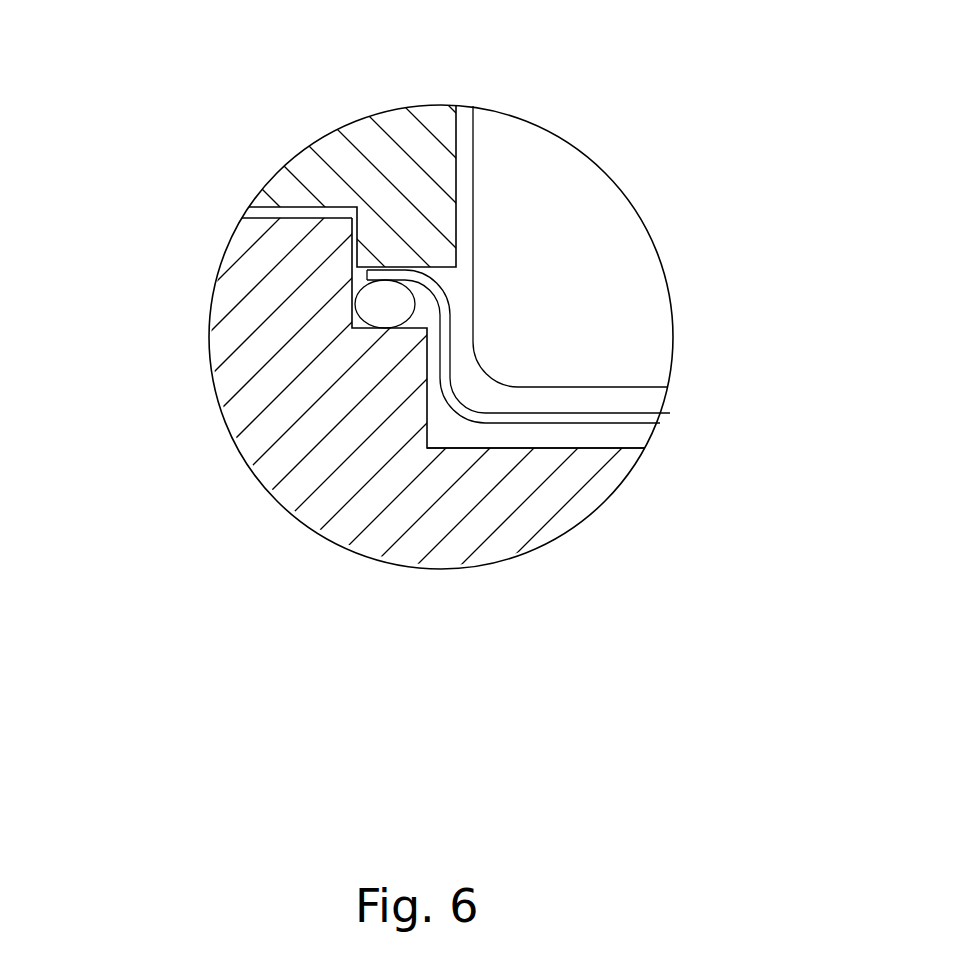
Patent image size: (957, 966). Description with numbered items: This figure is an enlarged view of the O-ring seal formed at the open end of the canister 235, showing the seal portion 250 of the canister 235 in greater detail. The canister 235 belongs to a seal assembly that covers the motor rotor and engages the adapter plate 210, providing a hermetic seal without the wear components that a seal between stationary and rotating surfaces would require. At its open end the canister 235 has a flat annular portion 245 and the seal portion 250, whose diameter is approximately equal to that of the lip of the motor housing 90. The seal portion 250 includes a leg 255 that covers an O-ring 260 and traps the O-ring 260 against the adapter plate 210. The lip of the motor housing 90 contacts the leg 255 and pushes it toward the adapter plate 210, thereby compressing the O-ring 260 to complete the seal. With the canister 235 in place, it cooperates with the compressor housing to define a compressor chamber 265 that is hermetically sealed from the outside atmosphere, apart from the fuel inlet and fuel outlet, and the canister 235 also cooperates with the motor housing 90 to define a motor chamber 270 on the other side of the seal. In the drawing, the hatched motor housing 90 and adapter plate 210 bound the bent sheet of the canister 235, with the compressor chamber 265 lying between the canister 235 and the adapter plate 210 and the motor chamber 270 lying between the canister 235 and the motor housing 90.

The motor housing 90 is at (397, 167).
The adapter plate 210 is at (320, 510).
The canister 235 is at (633, 417).
The flat annular portion 245 is at (547, 415).
The seal portion 250 is at (455, 307).
The leg 255 is at (357, 267).
The O-ring 260 is at (385, 301).
The compressor chamber 265 is at (542, 440).
The motor chamber 270 is at (557, 208).